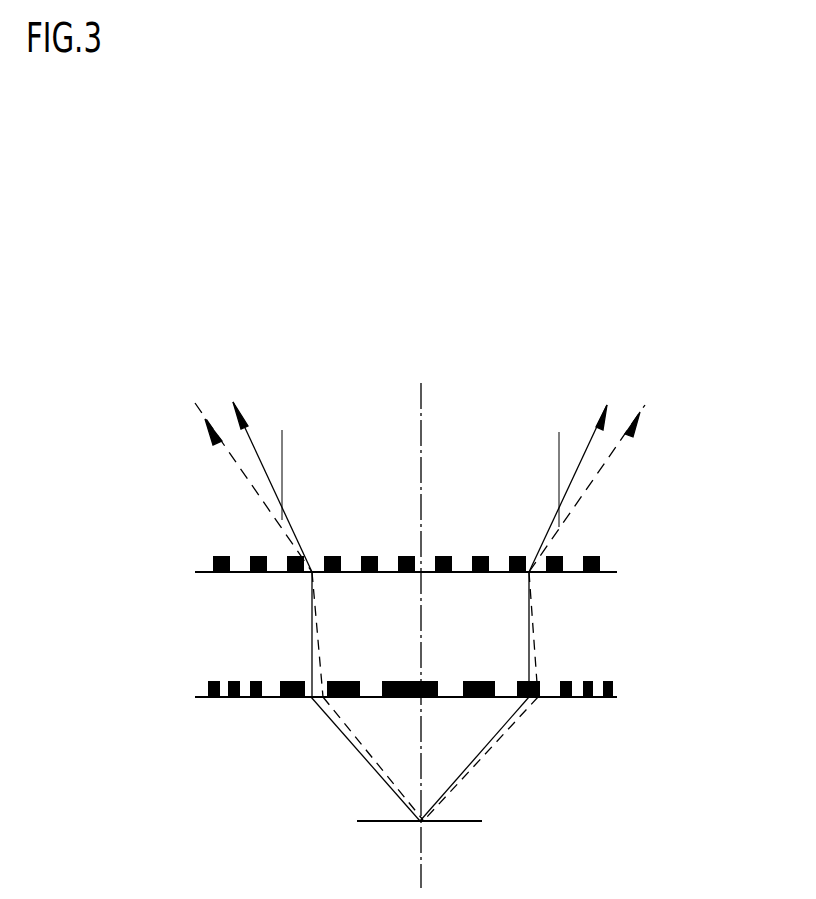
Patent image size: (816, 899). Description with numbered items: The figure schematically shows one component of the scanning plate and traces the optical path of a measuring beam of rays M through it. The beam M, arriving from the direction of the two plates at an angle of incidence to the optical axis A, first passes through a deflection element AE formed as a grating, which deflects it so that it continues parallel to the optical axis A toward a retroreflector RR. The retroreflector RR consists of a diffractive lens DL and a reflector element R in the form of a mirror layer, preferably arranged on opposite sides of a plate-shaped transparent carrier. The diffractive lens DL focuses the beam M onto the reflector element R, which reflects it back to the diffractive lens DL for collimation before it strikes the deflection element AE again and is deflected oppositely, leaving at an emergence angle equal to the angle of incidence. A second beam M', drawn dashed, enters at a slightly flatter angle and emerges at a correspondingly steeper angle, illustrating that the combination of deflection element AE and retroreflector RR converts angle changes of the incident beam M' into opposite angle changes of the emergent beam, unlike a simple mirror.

The measuring beam of rays M is at (272, 465).
The measuring beam of rays at changed angle of incidence M' is at (242, 487).
The optical axis A is at (421, 447).
The deflection element AE is at (572, 575).
The diffractive lens DL is at (577, 700).
The retroreflector RR is at (643, 698).
The reflector element R is at (450, 822).